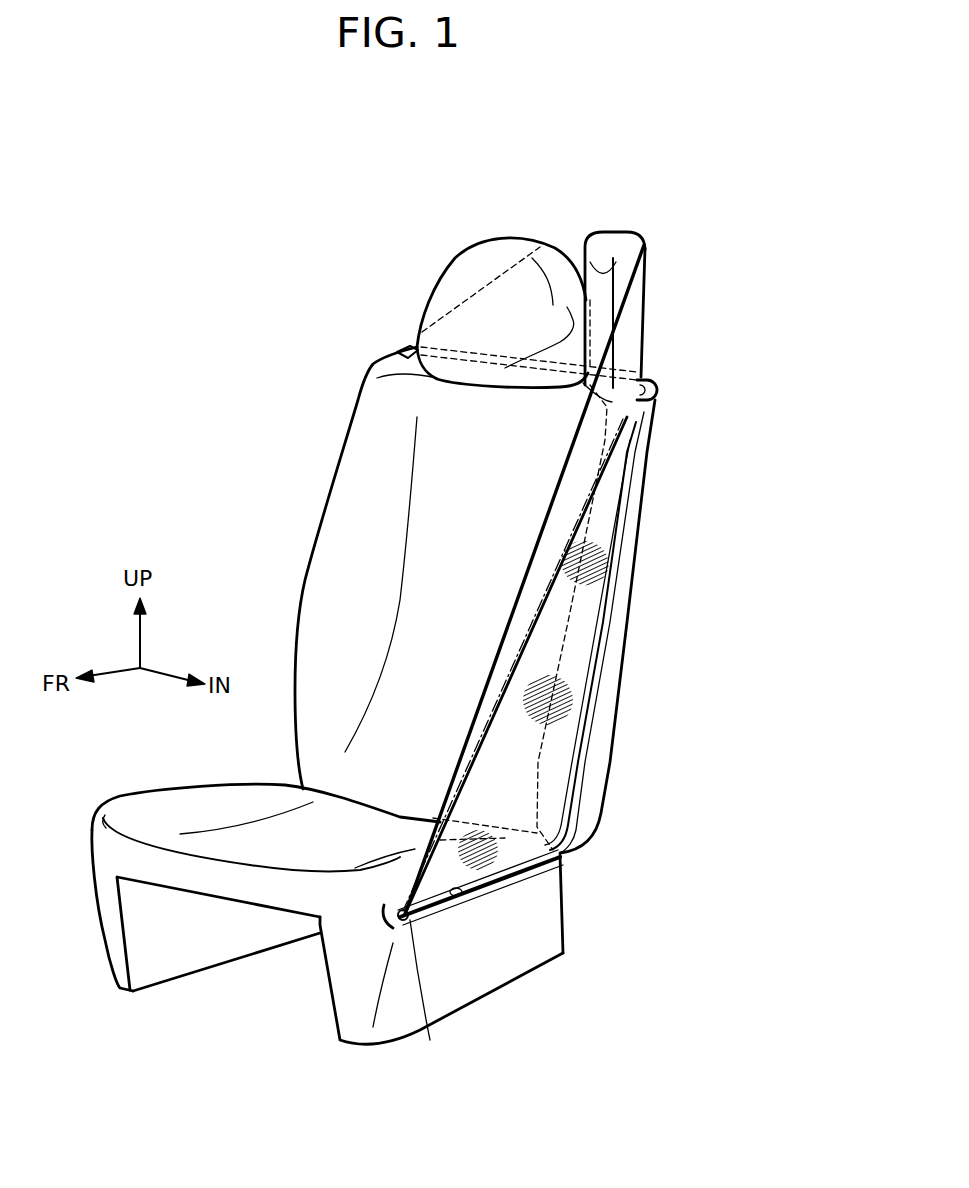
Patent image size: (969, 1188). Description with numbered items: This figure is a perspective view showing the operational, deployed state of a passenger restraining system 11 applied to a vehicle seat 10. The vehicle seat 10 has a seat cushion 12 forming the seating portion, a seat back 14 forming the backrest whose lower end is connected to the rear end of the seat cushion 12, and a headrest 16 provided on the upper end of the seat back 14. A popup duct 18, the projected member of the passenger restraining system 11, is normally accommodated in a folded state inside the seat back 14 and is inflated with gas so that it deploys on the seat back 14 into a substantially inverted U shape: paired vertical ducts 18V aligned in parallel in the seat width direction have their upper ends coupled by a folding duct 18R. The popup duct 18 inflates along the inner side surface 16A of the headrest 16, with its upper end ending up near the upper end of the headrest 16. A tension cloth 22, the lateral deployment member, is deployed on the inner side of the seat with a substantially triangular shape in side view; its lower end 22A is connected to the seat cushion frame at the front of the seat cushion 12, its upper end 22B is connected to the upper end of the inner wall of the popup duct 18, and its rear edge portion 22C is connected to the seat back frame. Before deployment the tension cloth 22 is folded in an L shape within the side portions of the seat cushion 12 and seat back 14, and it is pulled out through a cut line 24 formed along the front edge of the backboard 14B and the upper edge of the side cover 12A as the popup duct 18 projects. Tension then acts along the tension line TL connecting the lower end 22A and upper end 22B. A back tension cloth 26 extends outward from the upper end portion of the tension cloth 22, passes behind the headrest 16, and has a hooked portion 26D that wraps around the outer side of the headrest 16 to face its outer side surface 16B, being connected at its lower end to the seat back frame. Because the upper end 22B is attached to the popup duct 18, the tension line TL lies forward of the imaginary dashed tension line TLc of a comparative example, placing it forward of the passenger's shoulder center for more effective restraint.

The vehicle seat 10 is at (314, 428).
The passenger restraining system 11 is at (512, 515).
The seat cushion 12 is at (180, 802).
The side cover 12A is at (553, 917).
The seat back 14 is at (313, 643).
The backboard 14B is at (650, 470).
The headrest 16 is at (477, 262).
The side surface of the headrest 16A is at (505, 368).
The side surface of the headrest 16B is at (430, 303).
The popup duct 18 is at (638, 228).
The vertical ducts 18V is at (584, 285).
The folding duct 18R is at (613, 240).
The tension cloth 22 is at (565, 497).
The lower end of the tension cloth 22A is at (410, 927).
The upper end of the tension cloth 22B is at (647, 267).
The rear edge portion of the tension cloth 22C is at (560, 803).
The cut line 24 is at (612, 645).
The back tension cloth 26 is at (565, 240).
The hooked portion 26D is at (417, 347).
The tension line TL is at (507, 626).
The tension line of the comparative example TLc is at (484, 718).